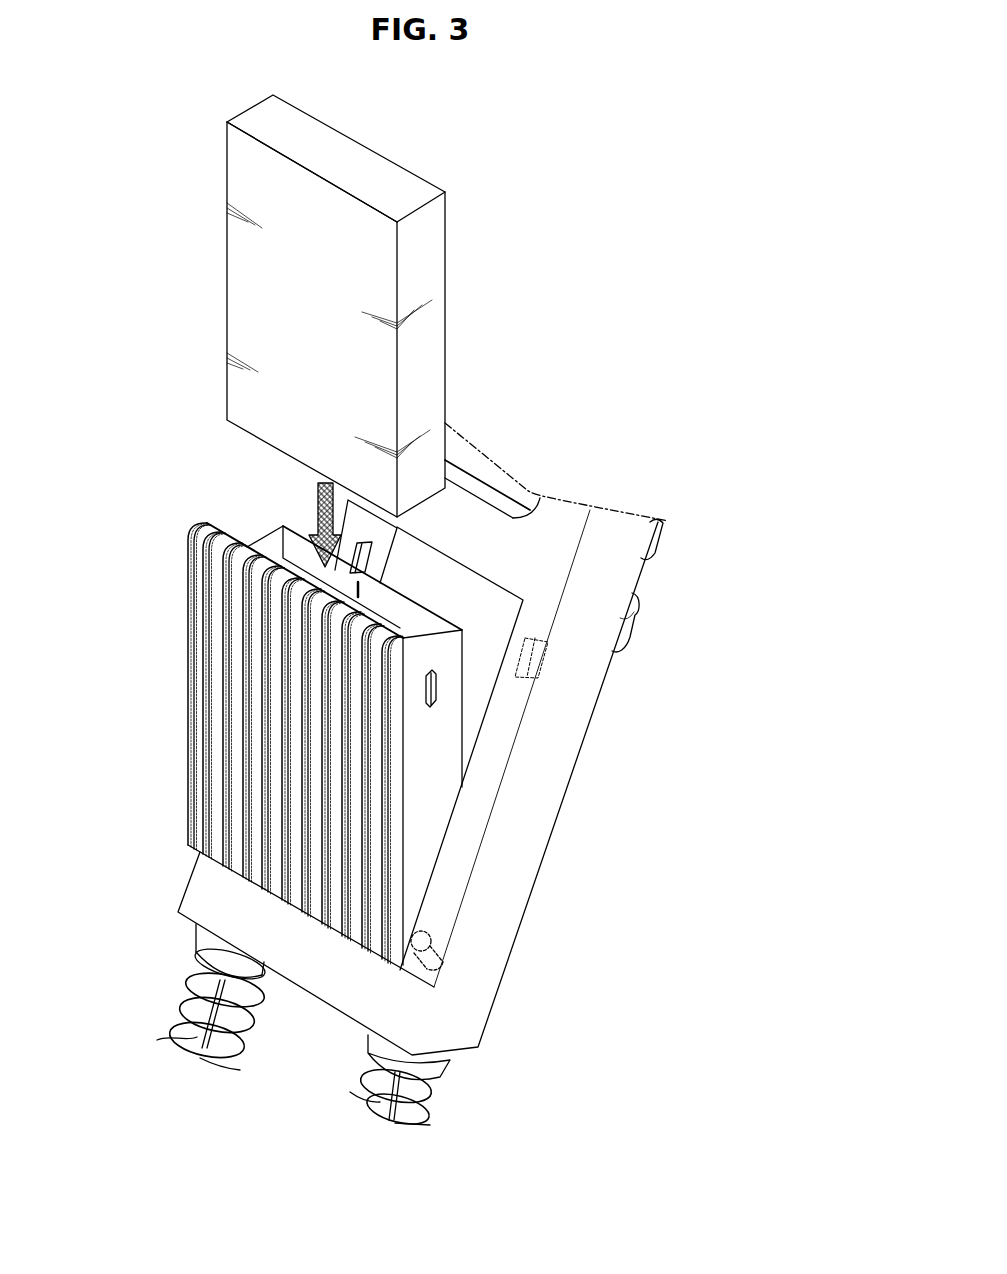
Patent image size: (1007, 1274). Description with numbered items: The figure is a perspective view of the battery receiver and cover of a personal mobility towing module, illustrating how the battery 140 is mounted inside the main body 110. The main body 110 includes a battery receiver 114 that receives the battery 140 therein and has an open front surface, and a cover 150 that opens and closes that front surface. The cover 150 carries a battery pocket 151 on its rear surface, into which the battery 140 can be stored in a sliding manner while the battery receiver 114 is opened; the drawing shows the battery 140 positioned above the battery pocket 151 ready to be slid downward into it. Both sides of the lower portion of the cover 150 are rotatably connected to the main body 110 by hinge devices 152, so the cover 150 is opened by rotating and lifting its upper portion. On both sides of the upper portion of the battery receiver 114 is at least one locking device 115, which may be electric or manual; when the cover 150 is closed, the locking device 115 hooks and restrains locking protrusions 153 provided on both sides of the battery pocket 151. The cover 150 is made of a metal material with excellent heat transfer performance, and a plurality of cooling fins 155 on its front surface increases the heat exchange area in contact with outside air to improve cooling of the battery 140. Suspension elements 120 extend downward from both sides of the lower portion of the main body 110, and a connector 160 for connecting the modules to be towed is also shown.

The main body 110 is at (512, 895).
The battery receiver 114 is at (470, 612).
The locking device 115 is at (362, 560).
The suspension element 120 is at (178, 1003).
The battery 140 is at (437, 255).
The cover 150 is at (362, 744).
The battery pocket 151 is at (442, 760).
The hinge device 152 is at (437, 950).
The locking protrusion 153 is at (433, 690).
The cooling fin 155 is at (235, 663).
The connector 160 is at (672, 540).